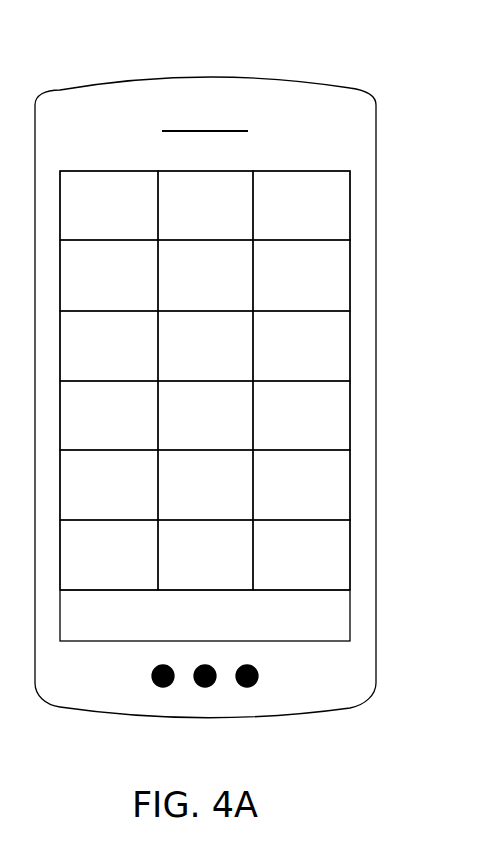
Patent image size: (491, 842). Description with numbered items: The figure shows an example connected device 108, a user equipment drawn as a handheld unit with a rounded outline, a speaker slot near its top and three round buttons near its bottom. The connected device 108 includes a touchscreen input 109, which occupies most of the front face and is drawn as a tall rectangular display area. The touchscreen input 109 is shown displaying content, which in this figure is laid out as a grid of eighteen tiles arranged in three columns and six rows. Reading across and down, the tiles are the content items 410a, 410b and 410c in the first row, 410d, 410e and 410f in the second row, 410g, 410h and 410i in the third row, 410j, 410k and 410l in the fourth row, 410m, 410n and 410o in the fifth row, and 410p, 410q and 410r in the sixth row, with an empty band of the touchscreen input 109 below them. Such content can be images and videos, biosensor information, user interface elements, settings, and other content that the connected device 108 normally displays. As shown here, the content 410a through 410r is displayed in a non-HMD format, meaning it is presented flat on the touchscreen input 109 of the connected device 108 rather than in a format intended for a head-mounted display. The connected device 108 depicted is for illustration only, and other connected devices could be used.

The connected device 108 is at (337, 88).
The touchscreen input 109 is at (350, 367).
The content 410a is at (109, 205).
The content 410b is at (205, 205).
The content 410c is at (301, 205).
The content 410d is at (109, 275).
The content 410e is at (205, 275).
The content 410f is at (301, 275).
The content 410g is at (109, 346).
The content 410h is at (205, 346).
The content 410i is at (301, 346).
The content 410j is at (109, 415).
The content 410k is at (205, 415).
The content 410l is at (301, 415).
The content 410m is at (109, 485).
The content 410n is at (205, 485).
The content 410o is at (301, 485).
The content 410p is at (109, 555).
The content 410q is at (205, 555).
The content 410r is at (301, 555).